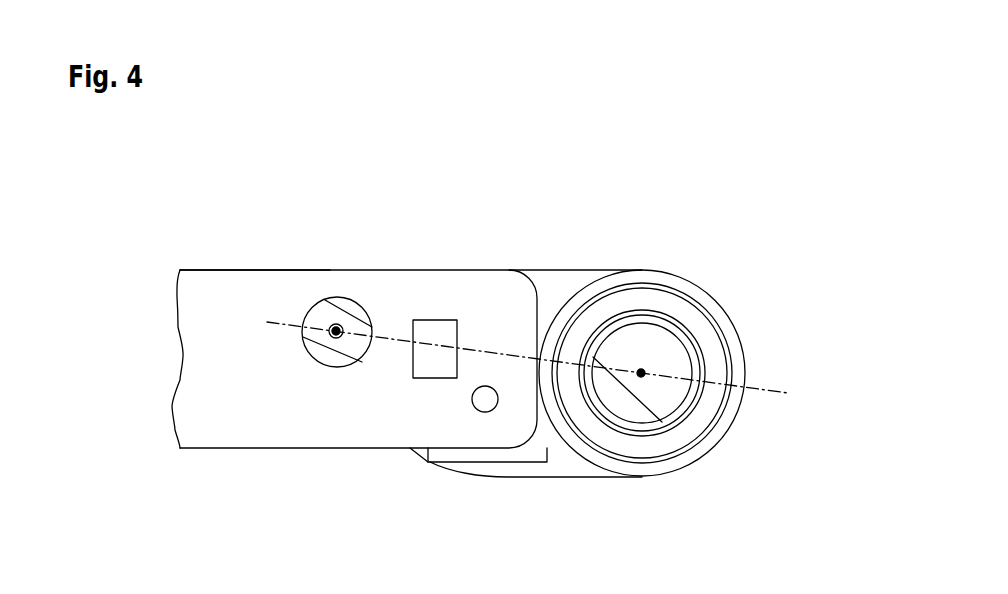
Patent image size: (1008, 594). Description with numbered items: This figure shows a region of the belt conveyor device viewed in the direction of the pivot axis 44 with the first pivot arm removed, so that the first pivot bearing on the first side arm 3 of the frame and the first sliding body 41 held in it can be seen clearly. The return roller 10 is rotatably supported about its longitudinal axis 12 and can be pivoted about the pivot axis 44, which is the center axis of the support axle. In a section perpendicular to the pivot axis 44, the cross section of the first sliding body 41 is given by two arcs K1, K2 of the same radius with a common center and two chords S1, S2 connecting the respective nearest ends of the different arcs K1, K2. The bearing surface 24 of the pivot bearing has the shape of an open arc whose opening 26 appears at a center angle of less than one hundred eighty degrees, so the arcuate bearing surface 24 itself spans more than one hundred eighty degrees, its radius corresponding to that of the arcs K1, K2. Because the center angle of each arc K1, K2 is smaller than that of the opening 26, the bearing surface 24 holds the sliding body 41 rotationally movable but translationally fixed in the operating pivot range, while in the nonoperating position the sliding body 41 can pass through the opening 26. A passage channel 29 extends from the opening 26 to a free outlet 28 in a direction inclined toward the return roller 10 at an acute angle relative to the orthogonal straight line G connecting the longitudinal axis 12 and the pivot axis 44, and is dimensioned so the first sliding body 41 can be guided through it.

The first side arm 3 is at (190, 290).
The return roller 10 is at (715, 303).
The longitudinal axis 12 is at (641, 373).
The bearing surface 24 is at (303, 333).
The opening 26 is at (370, 318).
The free outlet 28 is at (358, 278).
The passage channel 29 is at (337, 331).
The first sliding body 41 is at (308, 318).
The pivot axis 44 is at (365, 305).
The orthogonal straight line G is at (542, 369).
The first arc K1 is at (310, 318).
The second arc K2 is at (363, 360).
The first chord S1 is at (325, 298).
The second chord S2 is at (308, 352).